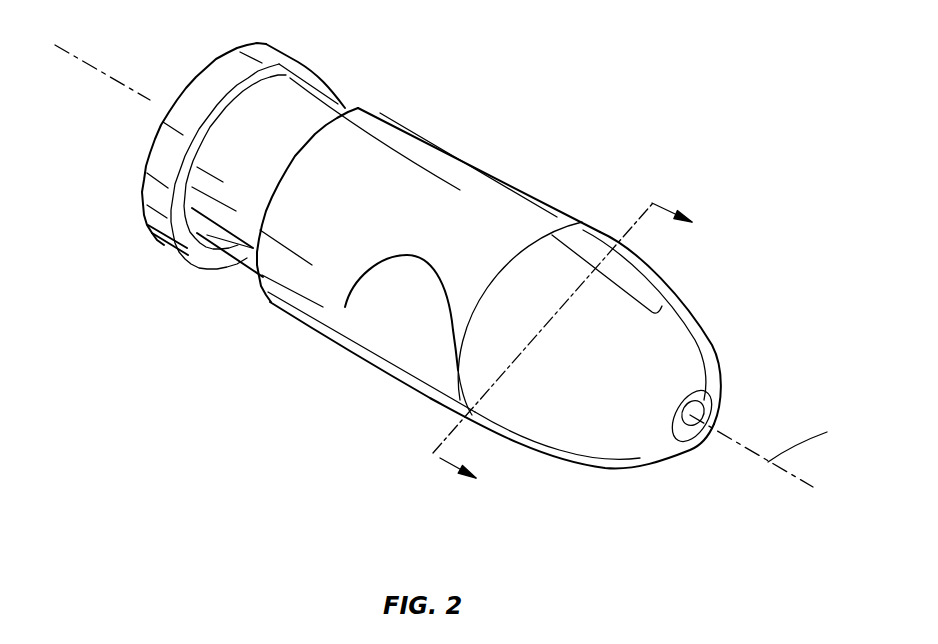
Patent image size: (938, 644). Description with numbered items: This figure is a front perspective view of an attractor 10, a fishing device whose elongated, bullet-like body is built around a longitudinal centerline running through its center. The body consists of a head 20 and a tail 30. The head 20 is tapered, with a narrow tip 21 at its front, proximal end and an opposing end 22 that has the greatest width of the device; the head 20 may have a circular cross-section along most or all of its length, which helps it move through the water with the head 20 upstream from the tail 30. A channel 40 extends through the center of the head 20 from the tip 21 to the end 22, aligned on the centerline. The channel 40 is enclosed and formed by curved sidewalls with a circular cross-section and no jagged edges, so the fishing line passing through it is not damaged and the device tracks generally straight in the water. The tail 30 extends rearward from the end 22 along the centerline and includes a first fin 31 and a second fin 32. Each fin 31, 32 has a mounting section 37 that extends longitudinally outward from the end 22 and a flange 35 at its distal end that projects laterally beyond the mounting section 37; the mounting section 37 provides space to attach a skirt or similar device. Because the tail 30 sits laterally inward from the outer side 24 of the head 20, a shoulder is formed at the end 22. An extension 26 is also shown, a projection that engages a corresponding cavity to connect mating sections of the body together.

The attractor 10 is at (603, 88).
The head 20 is at (677, 292).
The tip 21 is at (680, 447).
The end 22 is at (367, 103).
The outer side 24 is at (567, 435).
The extension 26 is at (397, 307).
The tail 30 is at (170, 225).
The first fin 31 is at (248, 262).
The second fin 32 is at (288, 117).
The flange 35 is at (158, 192).
The mounting section 37 is at (250, 200).
The channel 40 is at (700, 441).